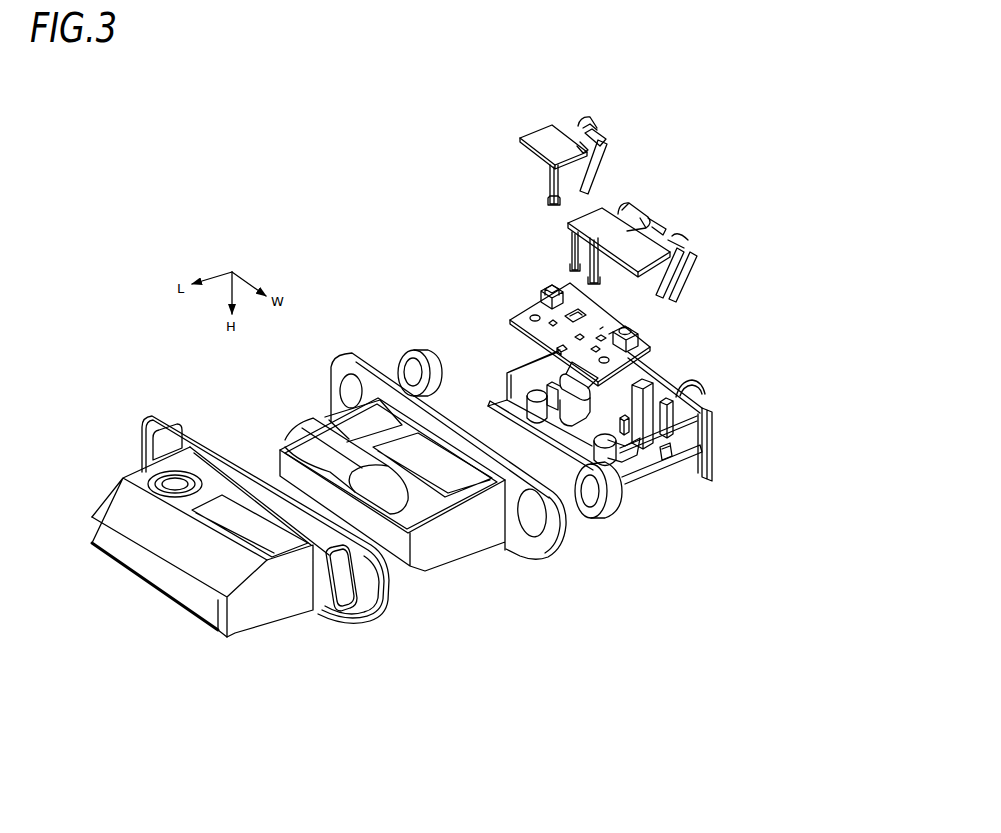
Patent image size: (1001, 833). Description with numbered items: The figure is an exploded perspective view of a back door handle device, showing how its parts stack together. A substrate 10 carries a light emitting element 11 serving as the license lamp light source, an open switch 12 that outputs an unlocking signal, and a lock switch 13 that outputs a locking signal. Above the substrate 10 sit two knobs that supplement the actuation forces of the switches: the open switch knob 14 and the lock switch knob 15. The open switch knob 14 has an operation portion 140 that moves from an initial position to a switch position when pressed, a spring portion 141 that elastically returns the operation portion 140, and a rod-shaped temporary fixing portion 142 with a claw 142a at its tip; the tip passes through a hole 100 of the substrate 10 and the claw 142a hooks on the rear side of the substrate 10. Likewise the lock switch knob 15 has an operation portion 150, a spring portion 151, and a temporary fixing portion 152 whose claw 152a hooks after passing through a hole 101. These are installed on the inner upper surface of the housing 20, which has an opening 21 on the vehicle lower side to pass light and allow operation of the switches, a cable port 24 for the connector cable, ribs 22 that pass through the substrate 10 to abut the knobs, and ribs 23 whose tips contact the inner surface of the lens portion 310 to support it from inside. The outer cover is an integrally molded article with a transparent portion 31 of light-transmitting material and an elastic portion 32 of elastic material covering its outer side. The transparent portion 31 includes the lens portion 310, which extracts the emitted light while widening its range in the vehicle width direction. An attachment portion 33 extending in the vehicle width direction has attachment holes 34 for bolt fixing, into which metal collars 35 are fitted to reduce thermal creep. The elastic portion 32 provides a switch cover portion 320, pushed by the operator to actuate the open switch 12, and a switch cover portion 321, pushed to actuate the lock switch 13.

The lock switch knob 15 is at (530, 123).
The operation portion 150 is at (538, 140).
The spring portion 151 is at (597, 134).
The temporary fixing portion 152 is at (549, 177).
The claw 152a is at (548, 201).
The open switch knob 14 is at (649, 206).
The operation portion 140 is at (636, 243).
The spring portion 141 is at (692, 258).
The temporary fixing portion 142 is at (573, 251).
The claw 142a is at (572, 268).
The lock switch 13 is at (540, 292).
The substrate 10 is at (521, 324).
The light emitting element 11 is at (556, 350).
The hole 101 is at (585, 315).
The hole 100 is at (618, 334).
The open switch 12 is at (640, 337).
The ribs 22 is at (636, 384).
The cable port 24 is at (706, 397).
The opening 21 is at (664, 439).
The ribs 23 is at (596, 448).
The metal collars 35 is at (400, 366).
The lens portion 310 is at (356, 478).
The attachment holes 34 is at (549, 523).
The attachment portion 33 is at (553, 558).
The housing 20 is at (670, 489).
The transparent portion 31 is at (440, 490).
The elastic portion 32 is at (254, 575).
The switch cover portion 321 is at (176, 487).
The switch cover portion 320 is at (258, 538).